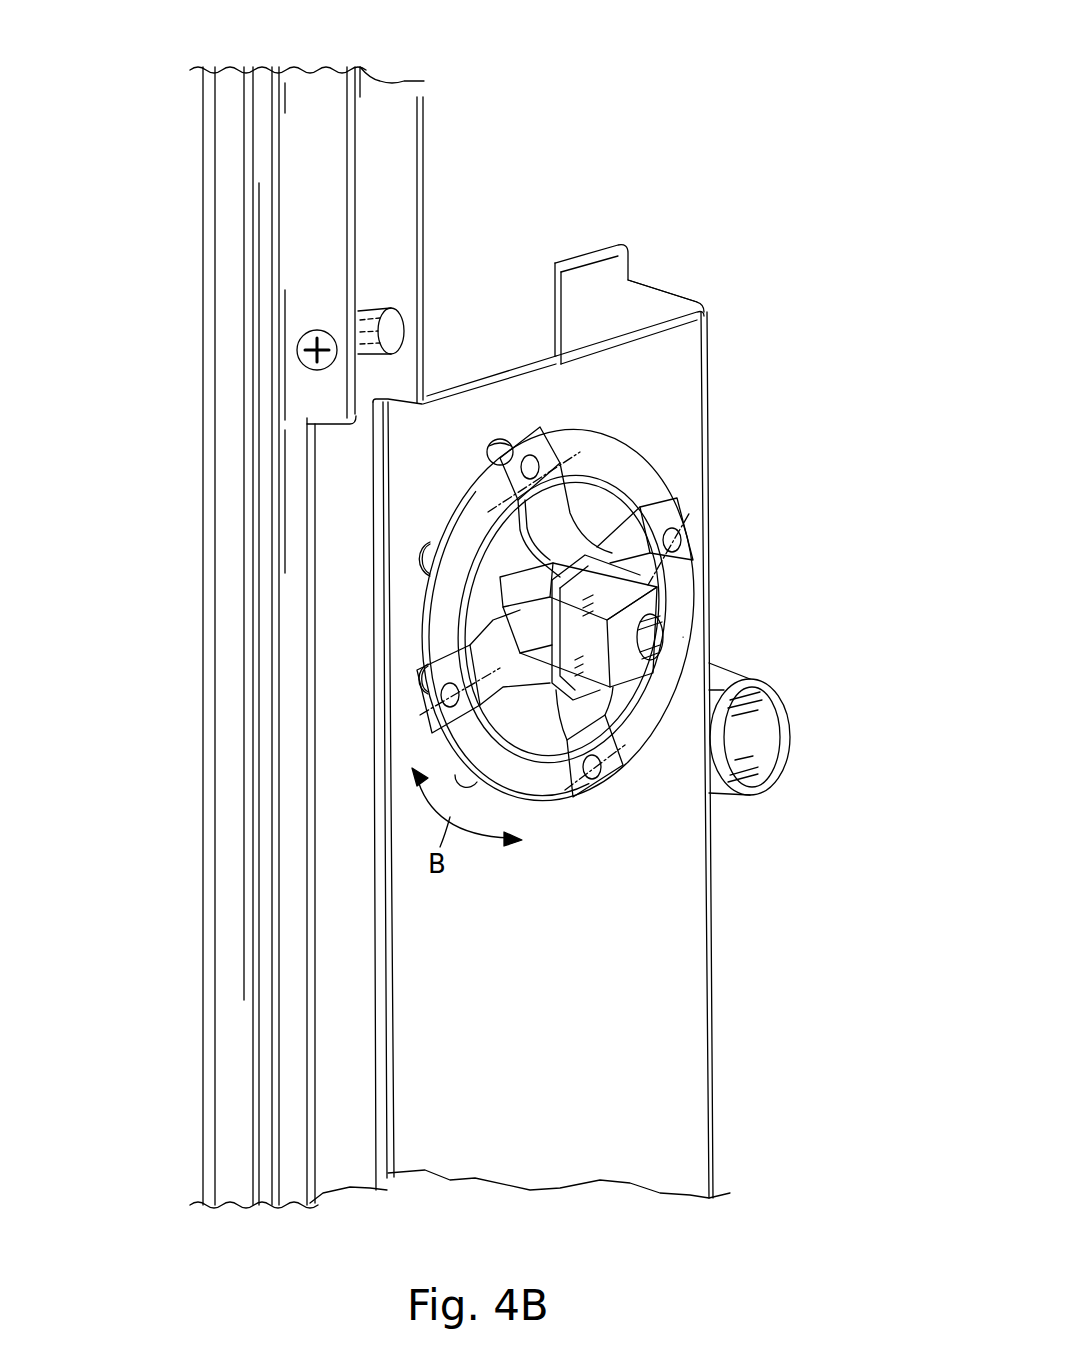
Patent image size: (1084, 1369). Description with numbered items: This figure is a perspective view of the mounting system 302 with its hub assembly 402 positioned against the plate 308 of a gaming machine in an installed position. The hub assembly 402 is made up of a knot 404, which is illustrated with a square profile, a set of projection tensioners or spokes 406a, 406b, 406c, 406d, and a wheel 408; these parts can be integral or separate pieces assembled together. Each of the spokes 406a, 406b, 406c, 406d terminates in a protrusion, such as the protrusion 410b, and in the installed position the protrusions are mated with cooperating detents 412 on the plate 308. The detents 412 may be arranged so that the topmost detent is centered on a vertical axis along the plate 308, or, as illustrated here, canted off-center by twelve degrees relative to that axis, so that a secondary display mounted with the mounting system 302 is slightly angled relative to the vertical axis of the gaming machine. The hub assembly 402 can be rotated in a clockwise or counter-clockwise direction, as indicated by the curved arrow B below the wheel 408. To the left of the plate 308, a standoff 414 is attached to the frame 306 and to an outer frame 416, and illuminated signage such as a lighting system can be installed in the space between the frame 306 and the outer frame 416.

The mounting system 302 is at (783, 390).
The frame 306 is at (355, 1168).
The plate 308 is at (575, 1096).
The hub assembly 402 is at (655, 672).
The knot 404 is at (655, 604).
The projection tensioner 406a is at (445, 692).
The projection tensioner 406b is at (597, 785).
The projection tensioner 406c is at (682, 522).
The projection tensioner 406d is at (560, 430).
The wheel 408 is at (528, 790).
The protrusion 410b is at (507, 440).
The detent 412 is at (422, 550).
The standoff 414 is at (383, 327).
The outer frame 416 is at (322, 85).